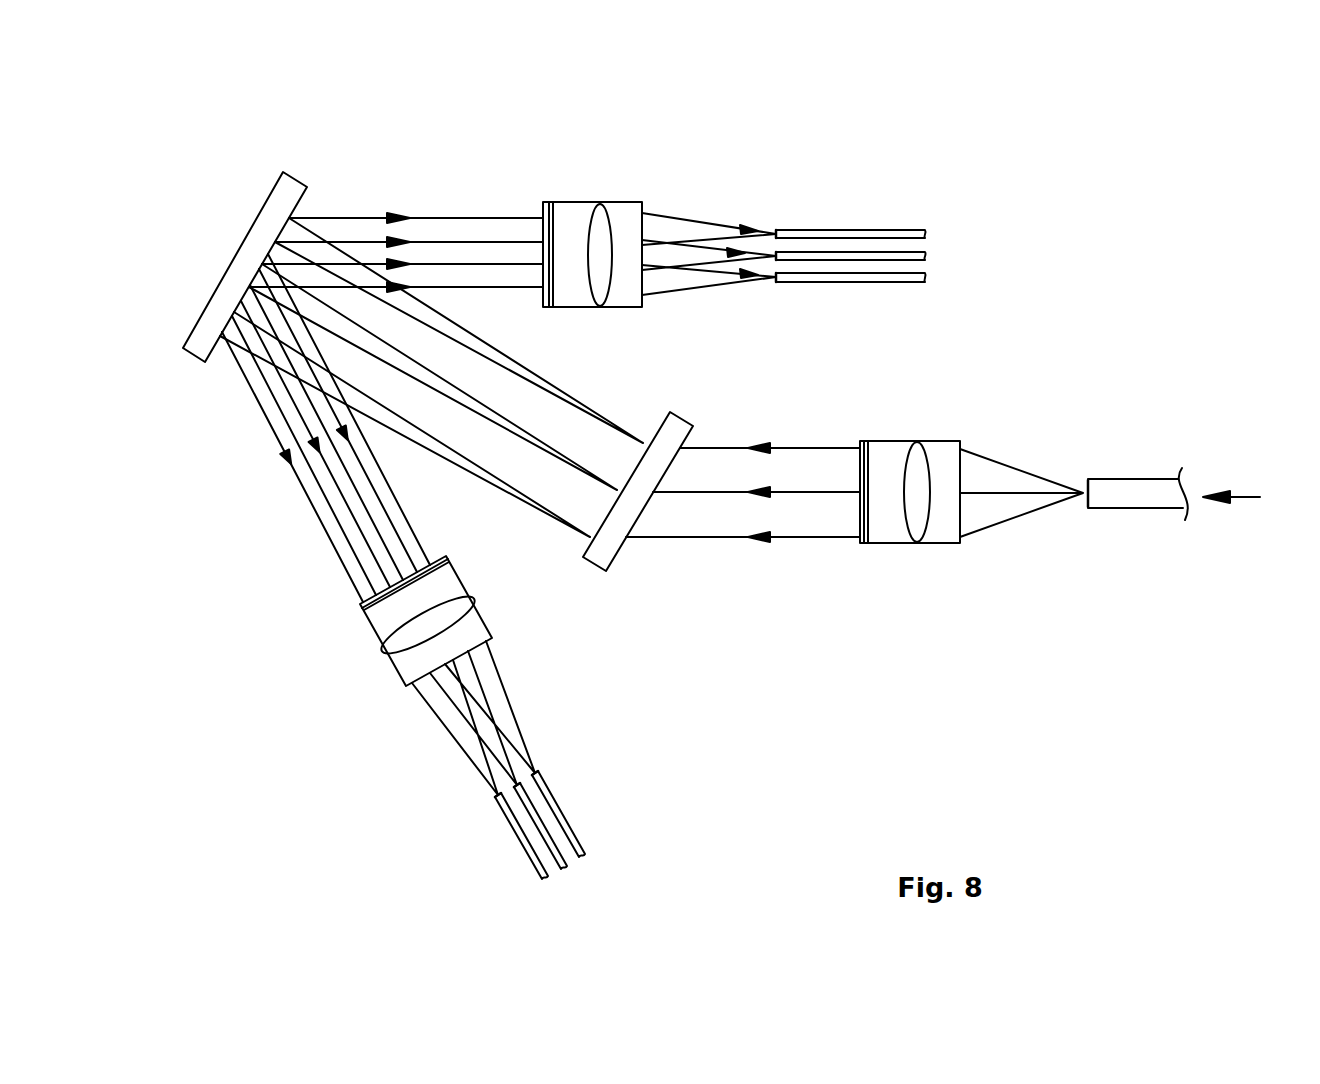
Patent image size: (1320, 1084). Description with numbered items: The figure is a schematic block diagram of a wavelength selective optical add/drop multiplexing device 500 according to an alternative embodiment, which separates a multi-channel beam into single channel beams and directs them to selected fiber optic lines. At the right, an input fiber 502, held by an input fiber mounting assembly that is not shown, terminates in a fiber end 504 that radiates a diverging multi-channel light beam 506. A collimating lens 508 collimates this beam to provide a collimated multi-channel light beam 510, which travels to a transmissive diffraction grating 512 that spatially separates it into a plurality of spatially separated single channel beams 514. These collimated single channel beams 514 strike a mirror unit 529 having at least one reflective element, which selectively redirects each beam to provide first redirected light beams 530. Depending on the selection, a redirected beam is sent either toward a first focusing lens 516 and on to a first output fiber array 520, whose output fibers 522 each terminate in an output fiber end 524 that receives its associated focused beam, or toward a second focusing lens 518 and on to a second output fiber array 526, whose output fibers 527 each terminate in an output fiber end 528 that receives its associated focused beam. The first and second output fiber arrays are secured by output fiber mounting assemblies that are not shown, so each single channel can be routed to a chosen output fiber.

The wavelength selective optical add/drop multiplexing device 500 is at (1155, 173).
The input fiber 502 is at (1157, 478).
The fiber end 504 is at (1083, 499).
The multi-channel light beam 506 is at (1025, 472).
The collimating lens 508 is at (875, 440).
The collimated multi-channel light beam 510 is at (705, 445).
The transmissive diffraction grating 512 is at (670, 433).
The single channel beams 514 is at (555, 387).
The first focusing lens 516 is at (580, 203).
The second focusing lens 518 is at (387, 647).
The first output fiber array 520 is at (883, 170).
The output fibers 522 is at (870, 230).
The output fiber end 524 is at (775, 230).
The second output fiber array 526 is at (637, 765).
The output fibers 527 is at (572, 823).
The output fiber end 528 is at (535, 772).
The mirror unit 529 is at (270, 220).
The first redirected light beams 530 is at (436, 217).